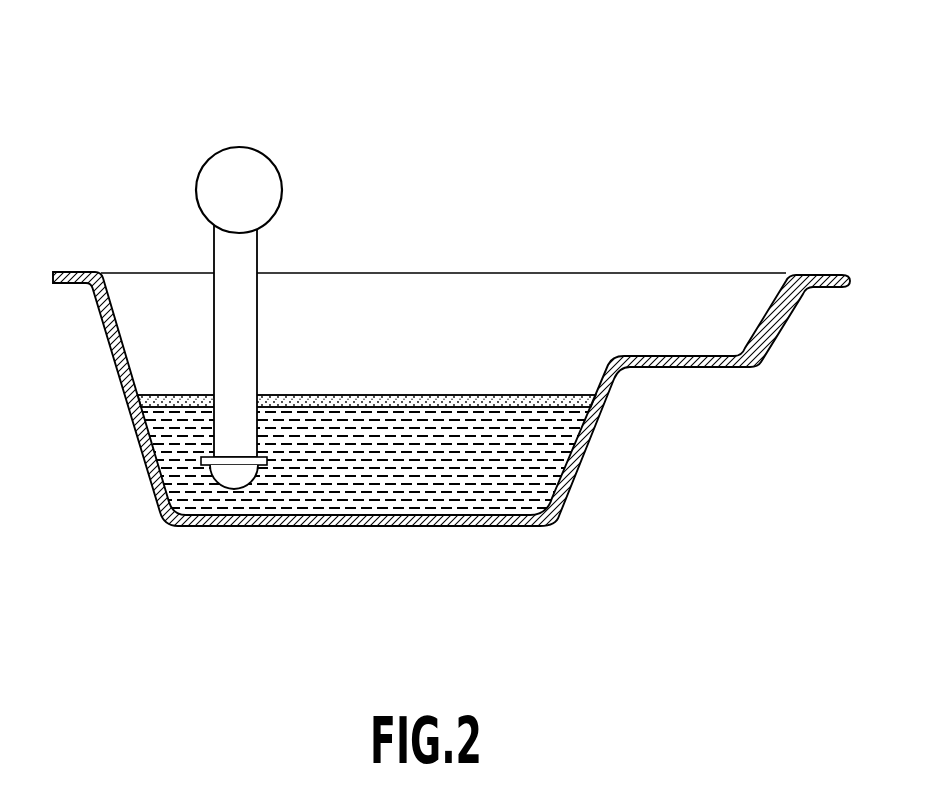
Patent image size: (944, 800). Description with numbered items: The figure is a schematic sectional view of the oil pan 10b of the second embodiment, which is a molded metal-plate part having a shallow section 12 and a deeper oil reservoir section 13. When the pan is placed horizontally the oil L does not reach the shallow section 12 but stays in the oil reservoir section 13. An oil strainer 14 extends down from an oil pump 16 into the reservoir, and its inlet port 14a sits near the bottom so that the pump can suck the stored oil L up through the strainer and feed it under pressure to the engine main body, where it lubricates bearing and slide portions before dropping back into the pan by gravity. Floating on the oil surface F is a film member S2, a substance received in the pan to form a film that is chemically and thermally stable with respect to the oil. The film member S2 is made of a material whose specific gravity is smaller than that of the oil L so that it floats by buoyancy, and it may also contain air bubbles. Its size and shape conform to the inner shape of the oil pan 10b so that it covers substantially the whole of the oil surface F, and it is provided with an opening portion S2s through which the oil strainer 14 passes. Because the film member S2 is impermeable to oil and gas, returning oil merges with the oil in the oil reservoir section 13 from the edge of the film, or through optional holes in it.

The oil pan 10b is at (535, 170).
The shallow section 12 is at (672, 368).
The oil reservoir section 13 is at (353, 524).
The oil strainer 14 is at (218, 271).
The inlet port 14a is at (240, 491).
The oil pump 16 is at (236, 147).
The film member S2 is at (357, 395).
The opening portion S2s is at (258, 395).
The oil surface F is at (538, 410).
The oil L is at (445, 493).